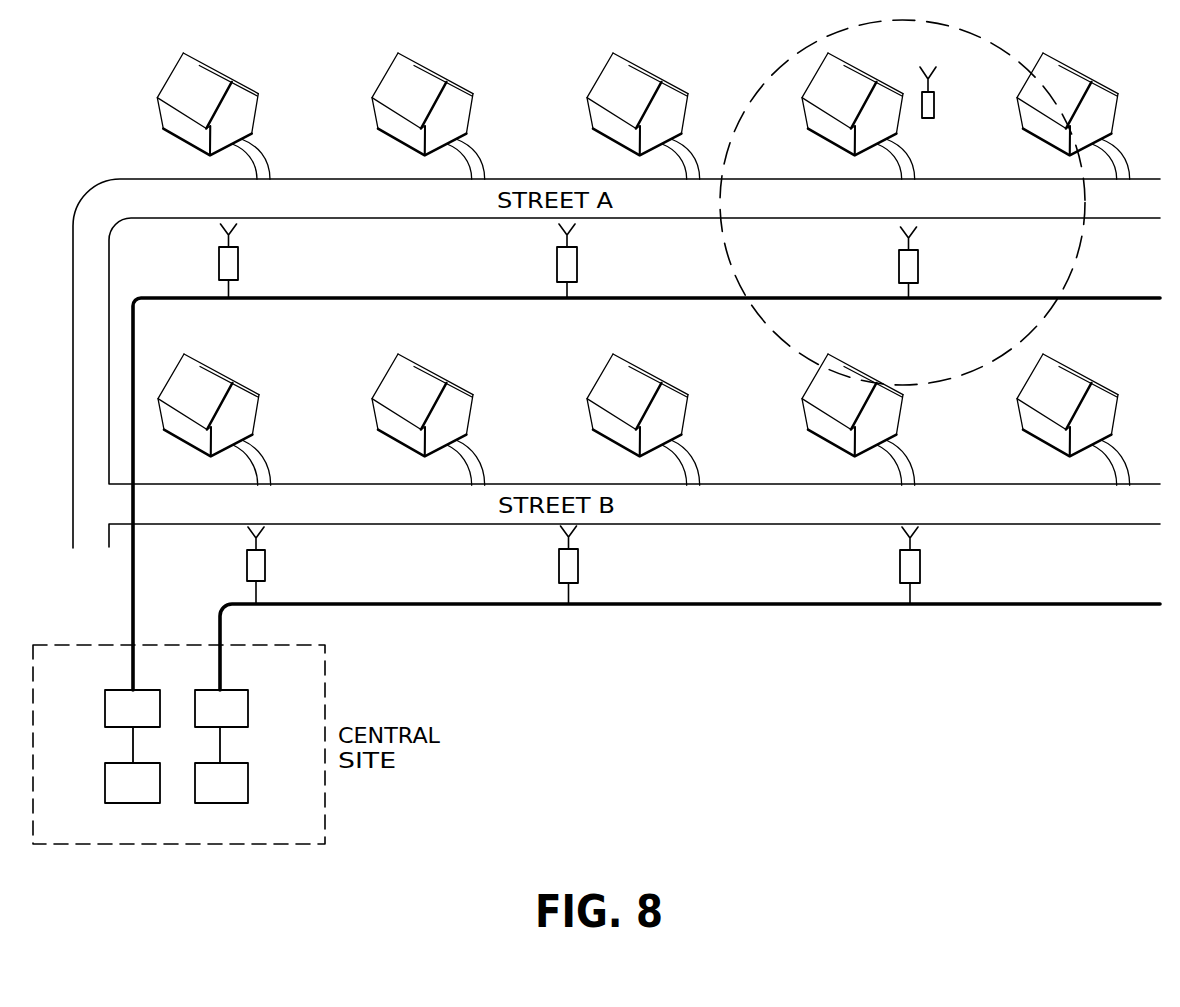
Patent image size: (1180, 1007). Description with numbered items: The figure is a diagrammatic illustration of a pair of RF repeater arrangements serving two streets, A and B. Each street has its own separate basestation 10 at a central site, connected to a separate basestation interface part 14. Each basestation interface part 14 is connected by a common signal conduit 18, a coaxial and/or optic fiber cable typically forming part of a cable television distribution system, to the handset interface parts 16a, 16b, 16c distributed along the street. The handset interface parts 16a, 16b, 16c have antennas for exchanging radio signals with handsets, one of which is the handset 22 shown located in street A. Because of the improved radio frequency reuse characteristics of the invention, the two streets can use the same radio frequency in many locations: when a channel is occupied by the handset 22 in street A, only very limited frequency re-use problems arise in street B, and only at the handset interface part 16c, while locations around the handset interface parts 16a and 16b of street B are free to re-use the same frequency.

The basestation 10 is at (105, 803).
The basestation interface part 14 is at (105, 727).
The handset interface part 16a is at (238, 263).
The handset interface part 16b is at (577, 263).
The handset interface part 16c is at (918, 267).
The common signal conduit 18 is at (398, 301).
The handset 22 is at (934, 104).